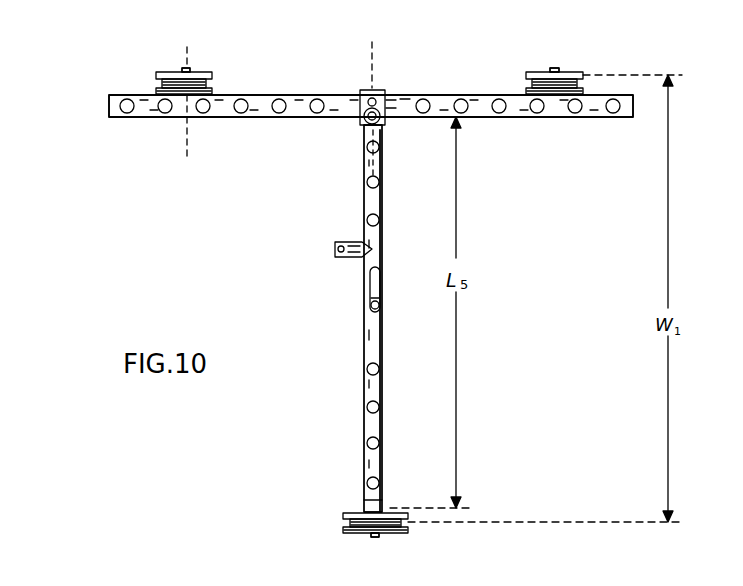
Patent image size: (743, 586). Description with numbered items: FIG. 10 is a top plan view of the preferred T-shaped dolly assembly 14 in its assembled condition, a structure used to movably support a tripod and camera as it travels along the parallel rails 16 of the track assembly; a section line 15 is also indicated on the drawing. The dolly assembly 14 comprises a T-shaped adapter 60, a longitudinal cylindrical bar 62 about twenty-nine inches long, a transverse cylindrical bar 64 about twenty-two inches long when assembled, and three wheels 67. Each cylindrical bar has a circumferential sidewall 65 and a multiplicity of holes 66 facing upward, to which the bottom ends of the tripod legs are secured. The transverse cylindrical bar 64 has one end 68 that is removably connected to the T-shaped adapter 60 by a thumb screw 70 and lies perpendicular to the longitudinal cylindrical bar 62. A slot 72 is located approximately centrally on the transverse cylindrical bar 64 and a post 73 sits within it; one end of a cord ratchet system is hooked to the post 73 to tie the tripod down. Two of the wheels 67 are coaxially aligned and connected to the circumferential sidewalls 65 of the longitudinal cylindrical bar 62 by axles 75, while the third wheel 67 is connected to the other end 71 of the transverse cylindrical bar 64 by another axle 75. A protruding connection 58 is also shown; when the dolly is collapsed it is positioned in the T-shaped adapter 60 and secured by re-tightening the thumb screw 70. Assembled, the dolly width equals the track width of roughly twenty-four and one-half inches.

The dolly assembly 14 is at (480, 244).
The section line 15- 15 is at (182, 36).
The parallel rail 16 is at (368, 44).
The protruding connection 58 is at (346, 258).
The T-shaped adapter 60 is at (376, 89).
The longitudinal cylindrical bar 62 is at (260, 93).
The transverse cylindrical bar 64 is at (385, 328).
The circumferential sidewall 65 is at (300, 118).
The holes 66 is at (280, 109).
The wheel 67 is at (208, 74).
The end of transverse cylindrical bar 68 is at (361, 126).
The thumb screw 70 is at (384, 118).
The other end of transverse cylindrical bar 71 is at (383, 500).
The slot 72 is at (382, 267).
The post 73 is at (370, 305).
The axle 75 is at (183, 69).